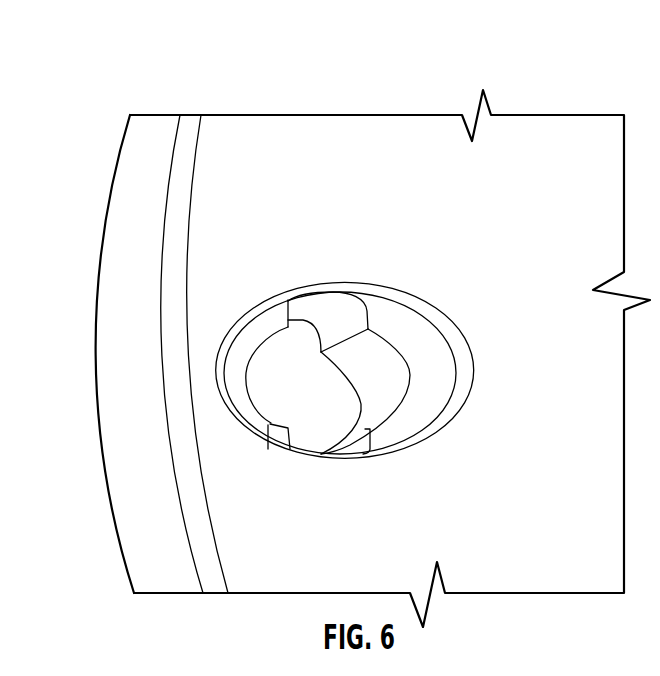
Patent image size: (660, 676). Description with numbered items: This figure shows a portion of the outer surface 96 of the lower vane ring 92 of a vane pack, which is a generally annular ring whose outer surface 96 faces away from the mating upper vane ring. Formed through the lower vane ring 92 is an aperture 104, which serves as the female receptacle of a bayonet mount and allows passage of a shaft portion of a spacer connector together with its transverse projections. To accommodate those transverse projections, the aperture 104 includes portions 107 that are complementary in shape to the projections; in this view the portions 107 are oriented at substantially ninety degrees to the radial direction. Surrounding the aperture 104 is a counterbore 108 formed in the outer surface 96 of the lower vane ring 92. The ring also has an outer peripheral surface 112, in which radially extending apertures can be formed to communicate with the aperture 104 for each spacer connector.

The lower vane ring 92 is at (325, 104).
The outer surface 96 is at (425, 132).
The aperture 104 is at (268, 367).
The portions 107 is at (273, 291).
The counterbore 108 is at (417, 331).
The outer peripheral surface 112 is at (128, 534).